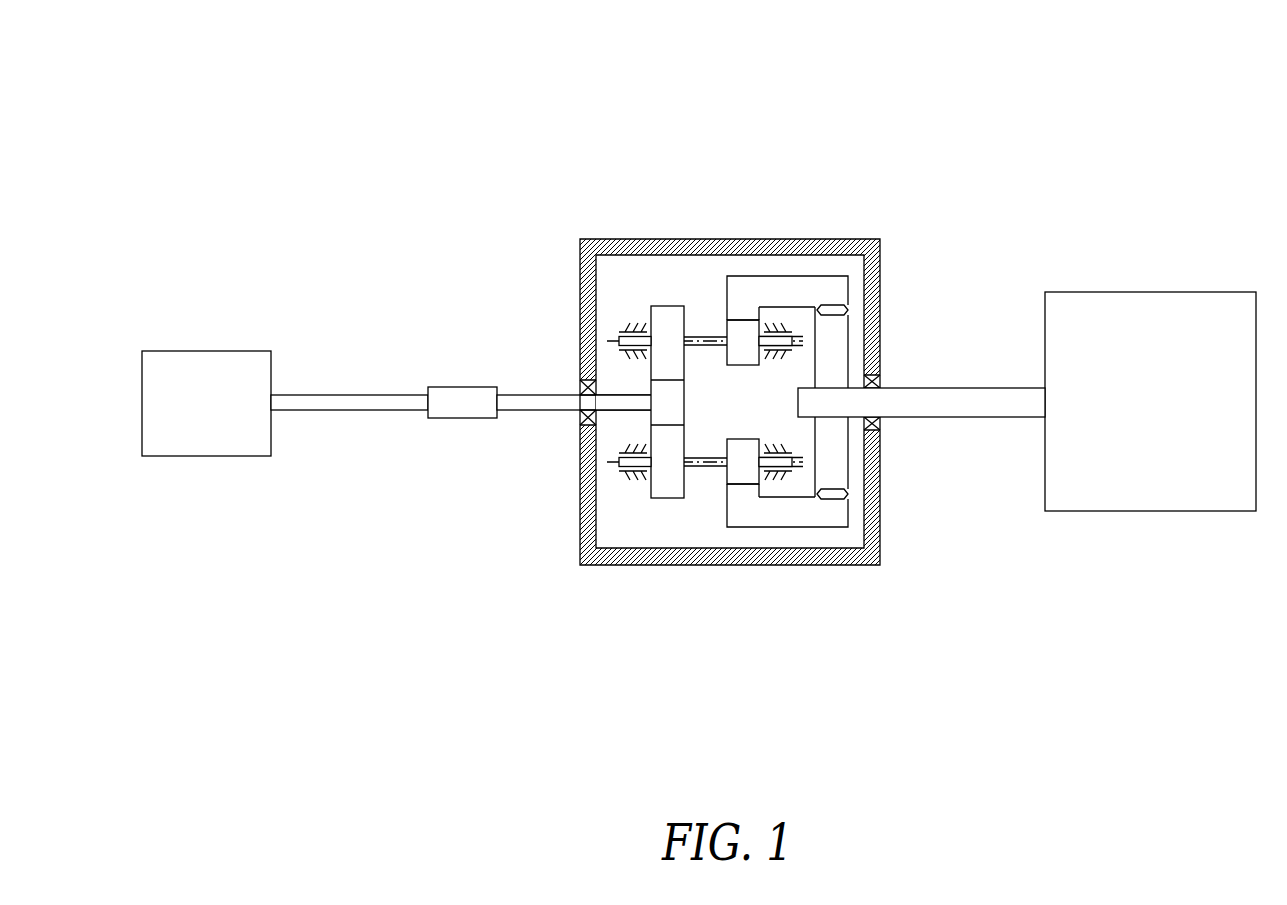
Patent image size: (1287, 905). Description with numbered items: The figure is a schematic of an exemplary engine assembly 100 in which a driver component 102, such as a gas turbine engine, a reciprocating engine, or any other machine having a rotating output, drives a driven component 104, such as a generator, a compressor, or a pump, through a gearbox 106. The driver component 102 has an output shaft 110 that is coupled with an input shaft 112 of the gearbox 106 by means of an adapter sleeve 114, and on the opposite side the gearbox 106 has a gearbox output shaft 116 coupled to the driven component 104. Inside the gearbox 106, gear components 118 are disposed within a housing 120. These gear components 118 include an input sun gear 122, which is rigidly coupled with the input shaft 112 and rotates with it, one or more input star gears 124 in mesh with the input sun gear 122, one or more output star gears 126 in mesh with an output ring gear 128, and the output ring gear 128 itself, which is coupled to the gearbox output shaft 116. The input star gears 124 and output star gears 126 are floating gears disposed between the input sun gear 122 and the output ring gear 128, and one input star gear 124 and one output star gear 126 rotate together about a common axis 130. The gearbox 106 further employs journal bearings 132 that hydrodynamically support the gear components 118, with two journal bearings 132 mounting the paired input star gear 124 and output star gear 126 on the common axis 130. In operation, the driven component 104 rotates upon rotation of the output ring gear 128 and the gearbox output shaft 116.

The engine assembly 100 is at (160, 130).
The driver component 102 is at (222, 415).
The driven component 104 is at (1166, 415).
The gearbox 106 is at (684, 438).
The output shaft 110 is at (321, 393).
The input shaft 112 is at (547, 394).
The adapter sleeve 114 is at (443, 418).
The gearbox output shaft 116 is at (938, 387).
The gear components 118 is at (684, 443).
The housing 120 is at (660, 239).
The input sun gear 122 is at (667, 413).
The input star gear 124 is at (590, 462).
The output star gear 126 is at (745, 348).
The output ring gear 128 is at (747, 507).
The common axis 130 is at (798, 340).
The journal bearing 132 is at (627, 327).